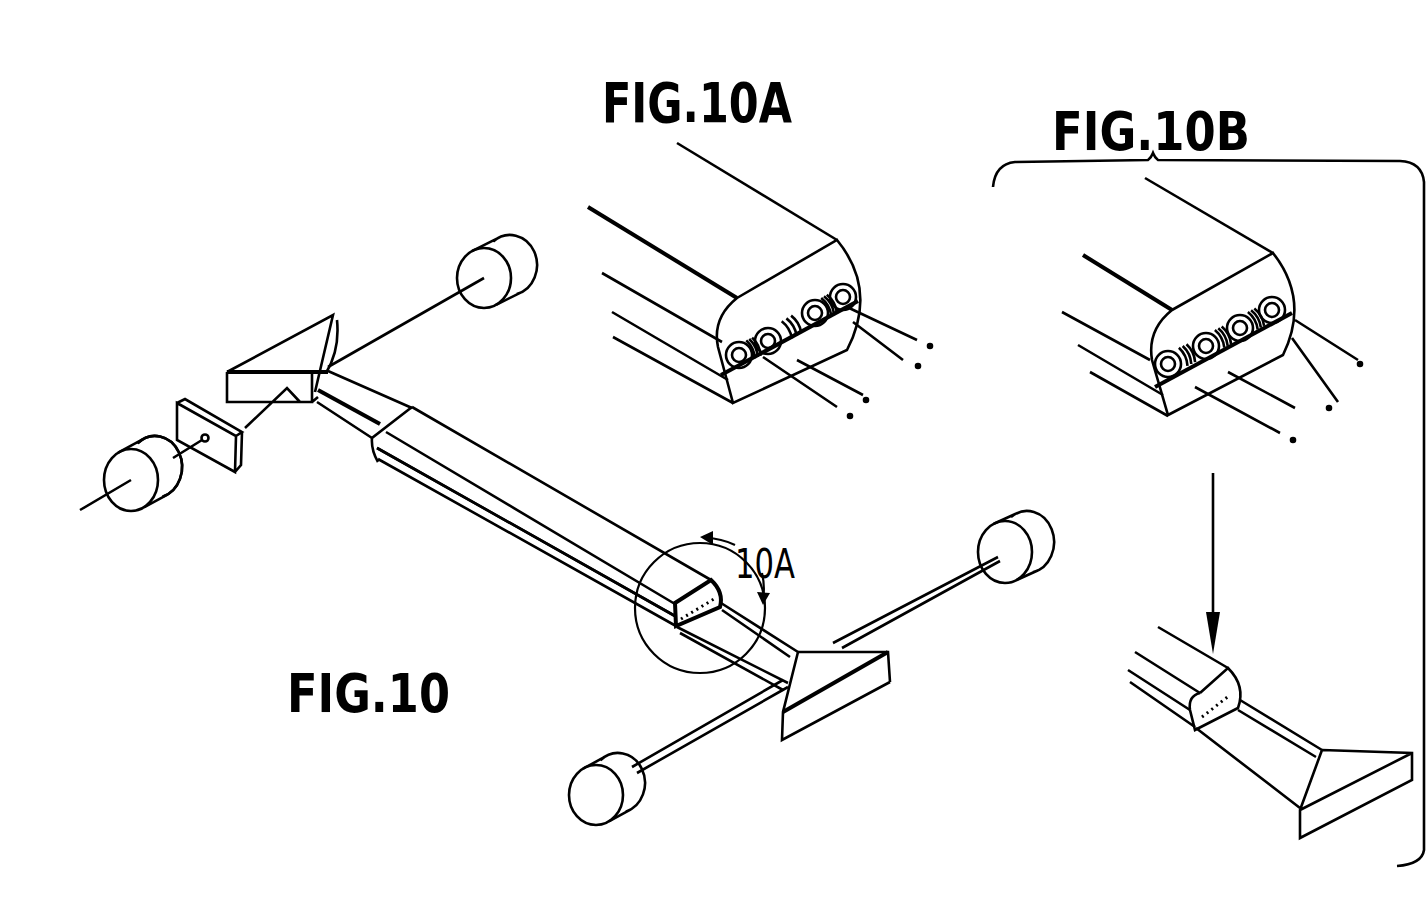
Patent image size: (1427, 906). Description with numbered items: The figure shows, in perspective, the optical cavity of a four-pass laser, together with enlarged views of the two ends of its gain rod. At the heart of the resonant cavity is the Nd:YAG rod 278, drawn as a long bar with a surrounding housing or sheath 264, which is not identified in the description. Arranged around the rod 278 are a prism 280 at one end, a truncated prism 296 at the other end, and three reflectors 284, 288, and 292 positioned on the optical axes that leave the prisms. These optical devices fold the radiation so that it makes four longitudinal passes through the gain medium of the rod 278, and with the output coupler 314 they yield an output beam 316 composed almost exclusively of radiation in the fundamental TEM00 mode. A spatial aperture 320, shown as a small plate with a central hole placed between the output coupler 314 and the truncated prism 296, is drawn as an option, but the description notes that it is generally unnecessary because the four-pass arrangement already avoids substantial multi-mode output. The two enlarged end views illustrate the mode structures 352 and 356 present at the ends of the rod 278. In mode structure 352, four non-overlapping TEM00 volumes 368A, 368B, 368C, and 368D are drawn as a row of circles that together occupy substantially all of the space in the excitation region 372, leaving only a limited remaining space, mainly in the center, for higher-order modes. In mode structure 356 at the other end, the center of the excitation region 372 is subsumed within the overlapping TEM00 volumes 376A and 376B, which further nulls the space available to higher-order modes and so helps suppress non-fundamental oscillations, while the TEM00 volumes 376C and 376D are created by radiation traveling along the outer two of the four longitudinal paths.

In FIG. 10, the light guide housing 264 is at (412, 407).
In FIG. 10, the rod 278 is at (491, 478).
In FIG. 10, the prism 280 is at (820, 673).
In FIG. 10, the reflector 284 is at (630, 805).
In FIG. 10, the reflector 288 is at (1038, 564).
In FIG. 10, the reflector 292 is at (467, 271).
In FIG. 10, the truncated prism 296 is at (302, 343).
In FIG. 10, the output coupler 314 is at (170, 490).
In FIG. 10, the output beam 316 is at (108, 497).
In FIG. 10, the spatial aperture 320 is at (245, 453).
In FIG. 10A, the mode structure 352 is at (712, 270).
In FIG. 10B, the mode structure 356 is at (1167, 292).
In FIG. 10A, the TEM00 volume 368A is at (742, 372).
In FIG. 10A, the TEM00 volume 368B is at (812, 340).
In FIG. 10A, the TEM00 volume 368C is at (813, 286).
In FIG. 10A, the TEM00 volume 368D is at (866, 268).
In FIG. 10A, the excitation region 372 is at (722, 347).
In FIG. 10B, the excitation region 372 is at (1140, 373).
In FIG. 10B, the TEM00 volume 376A is at (1211, 372).
In FIG. 10B, the TEM00 volume 376B is at (1237, 298).
In FIG. 10B, the TEM00 volume 376C is at (1144, 334).
In FIG. 10B, the TEM00 volume 376D is at (1290, 327).